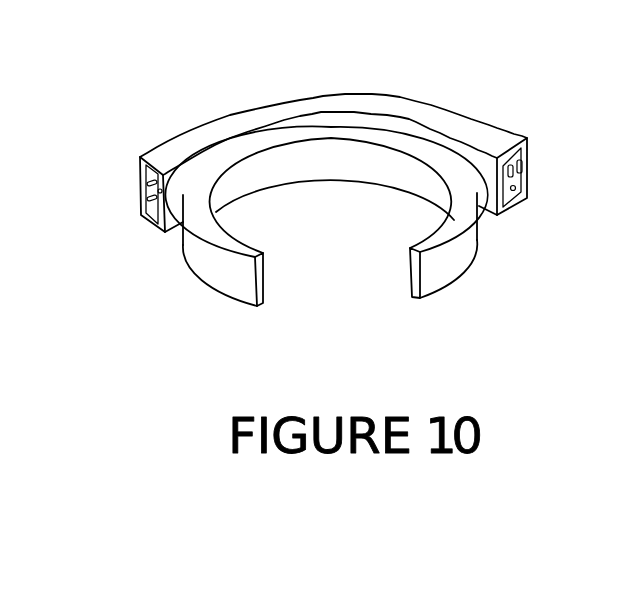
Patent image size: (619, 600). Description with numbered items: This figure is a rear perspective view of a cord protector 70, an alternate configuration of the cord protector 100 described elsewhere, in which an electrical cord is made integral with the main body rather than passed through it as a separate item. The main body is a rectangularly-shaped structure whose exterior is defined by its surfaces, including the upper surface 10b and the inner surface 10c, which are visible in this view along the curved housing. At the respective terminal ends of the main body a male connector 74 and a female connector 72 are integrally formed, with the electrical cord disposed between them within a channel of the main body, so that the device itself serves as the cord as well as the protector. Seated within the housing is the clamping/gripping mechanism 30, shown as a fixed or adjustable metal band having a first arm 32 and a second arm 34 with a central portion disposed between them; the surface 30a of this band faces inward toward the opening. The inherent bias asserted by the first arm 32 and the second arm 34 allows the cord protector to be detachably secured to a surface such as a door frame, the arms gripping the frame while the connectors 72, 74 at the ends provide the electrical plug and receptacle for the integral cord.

The cord protector 100 is at (388, 44).
The cord protector 70 is at (288, 84).
The upper surface 10b is at (190, 148).
The inner surface 10c is at (487, 203).
The clamping/gripping mechanism 30 is at (337, 203).
The inner surface of band 30a is at (416, 180).
The first arm 32 is at (262, 297).
The second arm 34 is at (412, 293).
The female connector 72 is at (556, 196).
The male connector 74 is at (108, 226).